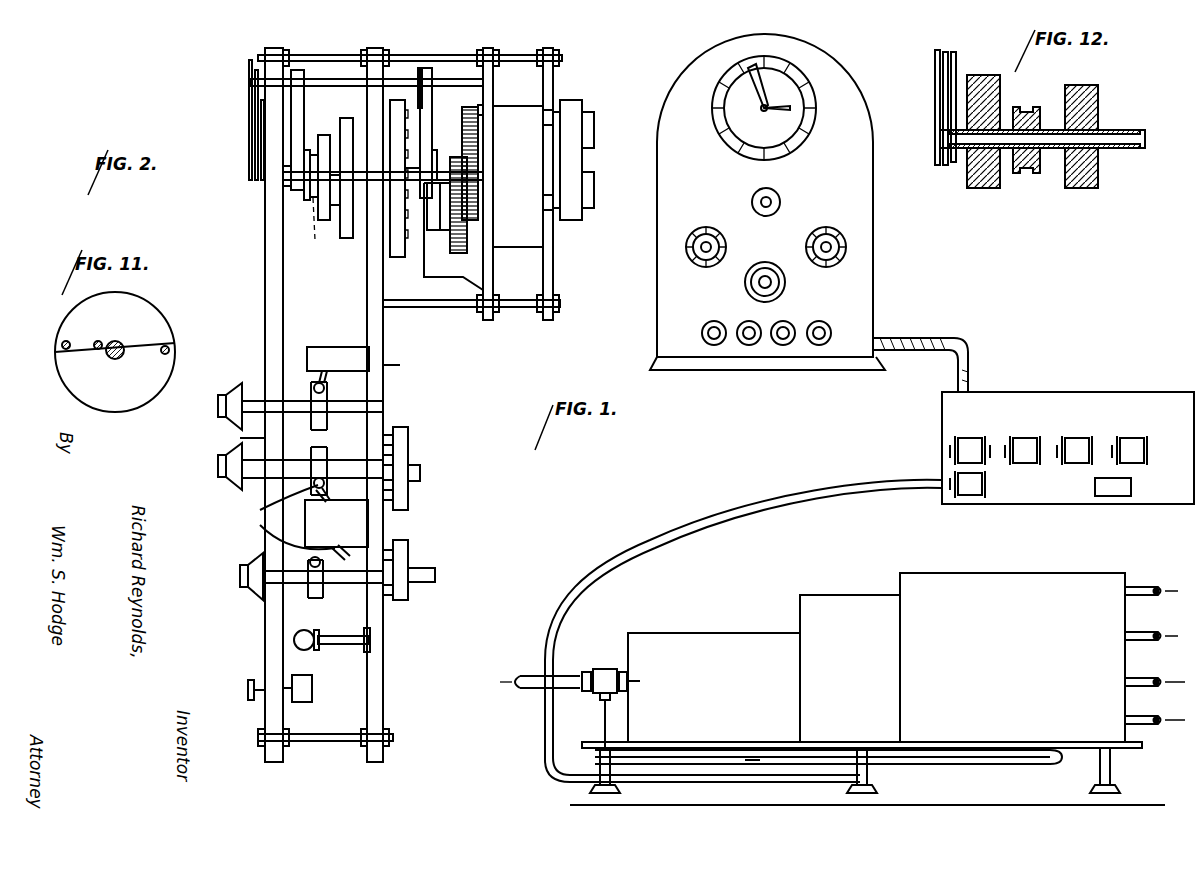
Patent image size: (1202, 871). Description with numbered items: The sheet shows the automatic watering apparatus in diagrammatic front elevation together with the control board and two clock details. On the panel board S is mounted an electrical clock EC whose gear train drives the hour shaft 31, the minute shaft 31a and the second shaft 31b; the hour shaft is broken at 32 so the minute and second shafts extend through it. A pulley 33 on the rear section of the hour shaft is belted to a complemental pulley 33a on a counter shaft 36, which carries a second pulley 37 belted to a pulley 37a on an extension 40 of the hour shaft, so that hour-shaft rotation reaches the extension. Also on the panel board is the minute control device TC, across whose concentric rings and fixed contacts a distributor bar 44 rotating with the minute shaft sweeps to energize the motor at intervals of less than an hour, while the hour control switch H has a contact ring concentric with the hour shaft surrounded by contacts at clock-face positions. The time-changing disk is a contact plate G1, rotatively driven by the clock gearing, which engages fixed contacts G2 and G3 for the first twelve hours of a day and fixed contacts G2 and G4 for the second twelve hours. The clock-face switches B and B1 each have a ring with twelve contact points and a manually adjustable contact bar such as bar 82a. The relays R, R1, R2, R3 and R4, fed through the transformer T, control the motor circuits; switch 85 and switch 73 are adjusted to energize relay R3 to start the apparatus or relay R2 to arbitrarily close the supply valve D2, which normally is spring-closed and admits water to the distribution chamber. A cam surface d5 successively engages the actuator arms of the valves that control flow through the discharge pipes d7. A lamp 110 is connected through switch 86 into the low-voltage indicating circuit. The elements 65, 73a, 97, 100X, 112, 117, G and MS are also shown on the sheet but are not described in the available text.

In FIG. 2, the hour shaft 31 is at (410, 170).
In FIG. 2, the minute shaft 31a is at (290, 178).
In FIG. 12, the minute shaft 31a is at (965, 145).
In FIG. 2, the second shaft 31b is at (250, 180).
In FIG. 12, the second shaft 31b is at (940, 140).
In FIG. 2, the break in hour shaft 32 is at (314, 232).
In FIG. 12, the break in hour shaft 32 is at (1105, 150).
In FIG. 2, the pulley 33 is at (437, 160).
In FIG. 2, the complemental pulley 33a is at (422, 70).
In FIG. 2, the counter shaft 36 is at (430, 110).
In FIG. 2, the second pulley 37 is at (298, 72).
In FIG. 2, the pulley 37a is at (306, 185).
In FIG. 12, the pulley 37a is at (1026, 173).
In FIG. 2, the extension of hour shaft 40 is at (314, 195).
In FIG. 12, the extension of hour shaft 40 is at (982, 188).
In FIG. 2, the distributor bar 44 is at (397, 257).
In FIG. 2, the insulating block 65 is at (324, 135).
In FIG. 12, the insulating block 65 is at (1130, 88).
In FIG. 2, the switch 73 is at (318, 347).
In FIG. 2, the pivot link 73a is at (335, 378).
In FIG. 2, the contact bar 82a is at (400, 427).
In FIG. 1, the switch 85 is at (819, 345).
In FIG. 1, the switch 86 is at (749, 345).
In FIG. 1, the push button 97 is at (783, 345).
In FIG. 2, the connecting links 100X is at (274, 517).
In FIG. 2, the lamp 110 is at (308, 630).
In FIG. 2, the switch block 112 is at (312, 688).
In FIG. 1, the push button 117 is at (714, 345).
In FIG. 1, the switch B is at (832, 215).
In FIG. 2, the switch B1 is at (360, 515).
In FIG. 1, the switch B1 is at (700, 225).
In FIG. 1, the supply valve D2 is at (604, 660).
In FIG. 2, the electrical clock EC is at (518, 176).
In FIG. 2, the gear G is at (462, 195).
In FIG. 2, the contact plate G1 is at (445, 228).
In FIG. 11, the contact plate G1 is at (150, 390).
In FIG. 11, the fixed contact G2 is at (100, 340).
In FIG. 11, the fixed contact G3 is at (62, 342).
In FIG. 11, the fixed contact G4 is at (172, 343).
In FIG. 2, the hour control switch H is at (346, 118).
In FIG. 2, the main switch MS is at (400, 542).
In FIG. 1, the main switch MS is at (768, 262).
In FIG. 1, the relay R is at (972, 438).
In FIG. 1, the relay R1 is at (1030, 450).
In FIG. 1, the relay R2 is at (1080, 450).
In FIG. 1, the relay R3 is at (1140, 455).
In FIG. 1, the relay R4 is at (972, 495).
In FIG. 2, the panel board S is at (383, 365).
In FIG. 1, the transformer T is at (1113, 486).
In FIG. 2, the circuit controlling device TC is at (455, 130).
In FIG. 1, the cam surface d5 is at (748, 758).
In FIG. 1, the discharge pipes d7 is at (1138, 700).